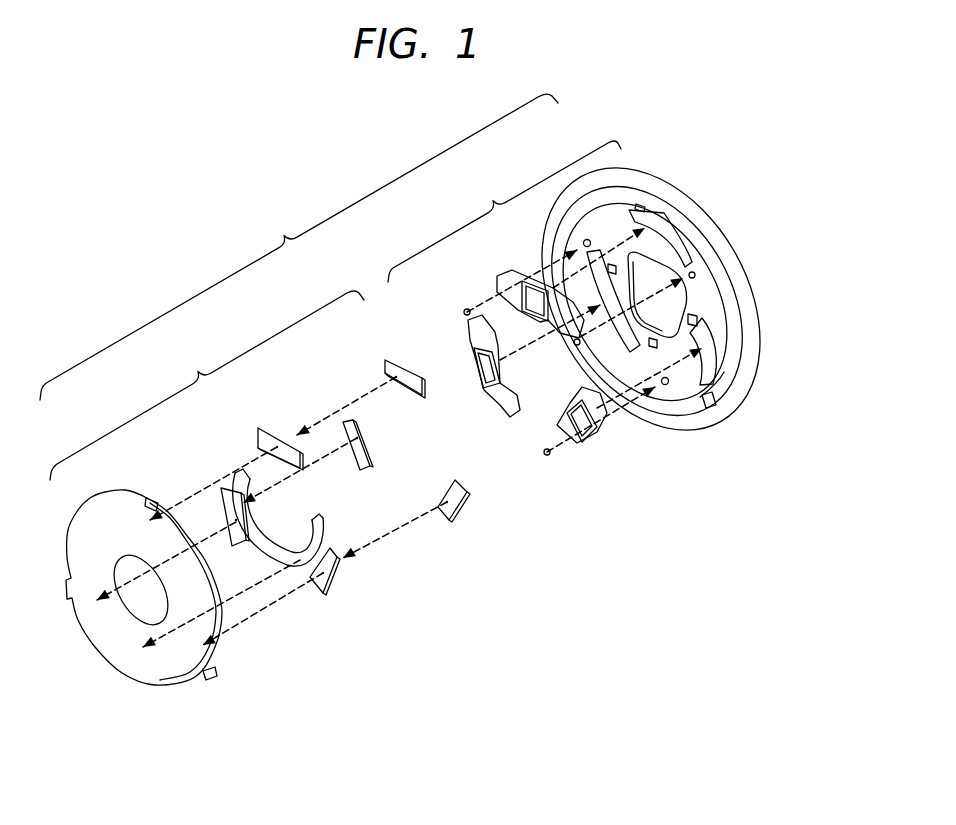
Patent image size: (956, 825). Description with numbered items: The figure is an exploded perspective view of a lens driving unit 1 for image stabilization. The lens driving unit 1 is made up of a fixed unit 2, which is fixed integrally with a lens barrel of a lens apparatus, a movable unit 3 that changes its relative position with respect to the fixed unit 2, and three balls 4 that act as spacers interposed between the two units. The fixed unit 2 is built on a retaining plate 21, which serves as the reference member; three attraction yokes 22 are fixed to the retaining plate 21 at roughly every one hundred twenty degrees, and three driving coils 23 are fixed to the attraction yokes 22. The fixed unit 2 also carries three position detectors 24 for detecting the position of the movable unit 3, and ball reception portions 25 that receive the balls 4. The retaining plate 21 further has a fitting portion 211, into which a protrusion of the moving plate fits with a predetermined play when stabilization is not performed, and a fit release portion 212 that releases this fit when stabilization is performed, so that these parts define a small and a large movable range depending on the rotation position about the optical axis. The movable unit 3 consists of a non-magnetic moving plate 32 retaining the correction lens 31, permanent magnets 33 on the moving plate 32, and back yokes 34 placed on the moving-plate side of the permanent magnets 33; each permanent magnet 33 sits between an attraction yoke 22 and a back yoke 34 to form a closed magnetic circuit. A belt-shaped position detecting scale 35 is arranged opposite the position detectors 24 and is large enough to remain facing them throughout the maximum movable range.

The lens driving unit 1 is at (299, 247).
The fixed unit 2 is at (504, 211).
The movable unit 3 is at (207, 385).
The ball 4 is at (547, 458).
The retaining plate 21 is at (703, 228).
The attraction yoke 22 is at (502, 410).
The driving coil 23 is at (472, 357).
The position detector 24 is at (700, 312).
The ball reception portion 25 is at (663, 392).
The fitting portion 211 is at (717, 373).
The fit release portion 212 is at (710, 403).
The correction lens 31 is at (145, 606).
The moving plate 32 is at (167, 657).
The permanent magnet 33 is at (455, 506).
The back yoke 34 is at (337, 575).
The position detecting scale 35 is at (290, 562).